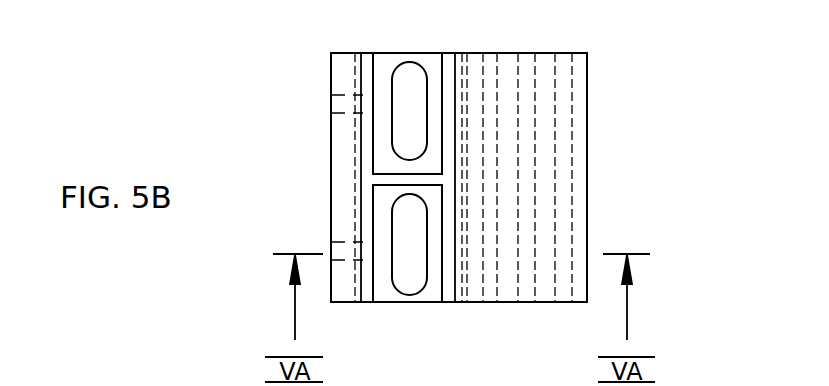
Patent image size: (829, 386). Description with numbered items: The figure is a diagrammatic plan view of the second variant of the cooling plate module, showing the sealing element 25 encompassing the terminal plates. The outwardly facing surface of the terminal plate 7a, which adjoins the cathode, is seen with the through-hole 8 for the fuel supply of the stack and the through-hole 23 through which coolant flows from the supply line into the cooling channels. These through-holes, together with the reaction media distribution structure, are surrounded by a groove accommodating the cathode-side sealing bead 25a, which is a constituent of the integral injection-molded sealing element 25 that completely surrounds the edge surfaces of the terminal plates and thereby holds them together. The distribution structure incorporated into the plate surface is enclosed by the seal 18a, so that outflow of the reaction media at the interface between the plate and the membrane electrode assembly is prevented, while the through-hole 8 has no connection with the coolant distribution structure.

The terminal plate 7a is at (587, 160).
The through-hole for fuel supply 8 is at (404, 68).
The seal 18a is at (563, 115).
The through-hole 23 is at (401, 272).
The sealing element 25 is at (331, 140).
The sealing bead 25a is at (455, 57).